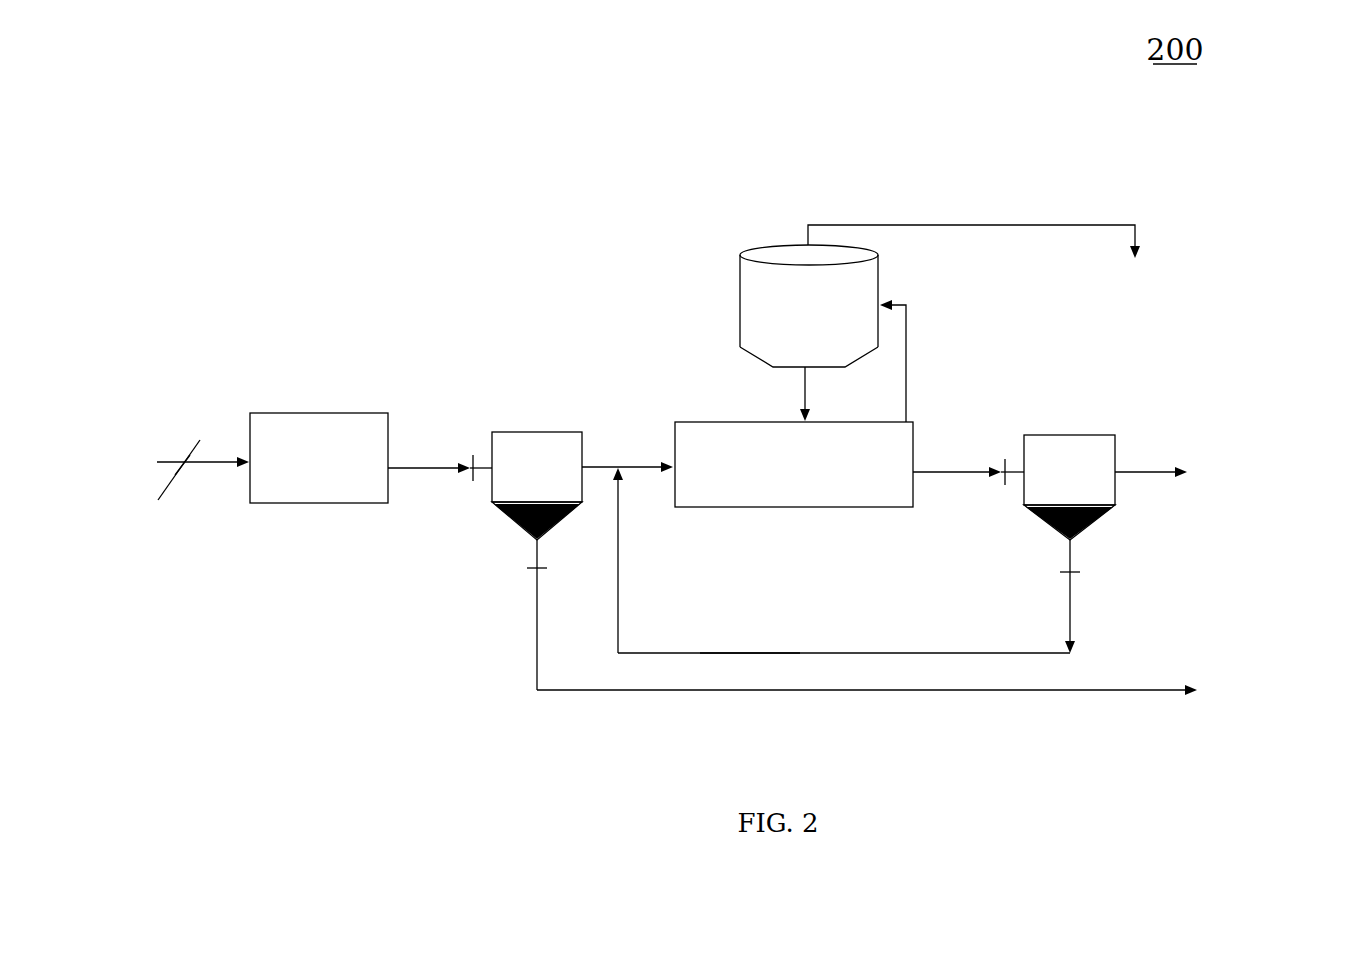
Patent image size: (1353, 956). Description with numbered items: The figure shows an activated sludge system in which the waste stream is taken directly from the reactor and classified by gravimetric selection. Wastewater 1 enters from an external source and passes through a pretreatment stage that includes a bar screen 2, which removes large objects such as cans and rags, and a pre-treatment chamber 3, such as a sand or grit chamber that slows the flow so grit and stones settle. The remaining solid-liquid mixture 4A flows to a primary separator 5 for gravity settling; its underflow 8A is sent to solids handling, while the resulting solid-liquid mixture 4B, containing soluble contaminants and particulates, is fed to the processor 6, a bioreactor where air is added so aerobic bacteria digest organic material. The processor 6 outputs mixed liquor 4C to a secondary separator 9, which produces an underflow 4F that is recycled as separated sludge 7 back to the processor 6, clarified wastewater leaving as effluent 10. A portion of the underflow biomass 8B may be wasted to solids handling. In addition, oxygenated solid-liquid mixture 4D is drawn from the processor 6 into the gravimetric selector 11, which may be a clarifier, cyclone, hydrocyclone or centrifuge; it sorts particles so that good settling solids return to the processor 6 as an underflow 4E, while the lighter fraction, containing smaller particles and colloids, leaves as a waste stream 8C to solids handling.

The wastewater 1 is at (203, 470).
The bar screen 2 is at (208, 428).
The pre-treatment chamber 3 is at (325, 405).
The solid-liquid mixture 4A is at (417, 465).
The solid-liquid mixture 4B is at (617, 463).
The mixed liquor 4C is at (968, 475).
The oxygenated solid-liquid mixture 4D is at (906, 378).
The underflow 4E is at (806, 378).
The underflow 4F is at (1073, 600).
The primary separator 5 is at (537, 432).
The processor 6 is at (712, 421).
The separated sludge 7 is at (789, 643).
The underflow 8A is at (828, 692).
The underflow biomass 8B is at (900, 653).
The waste stream 8C is at (1137, 236).
The secondary separator 9 is at (1100, 433).
The effluent 10 is at (1155, 470).
The gravimetric selector 11 is at (740, 318).